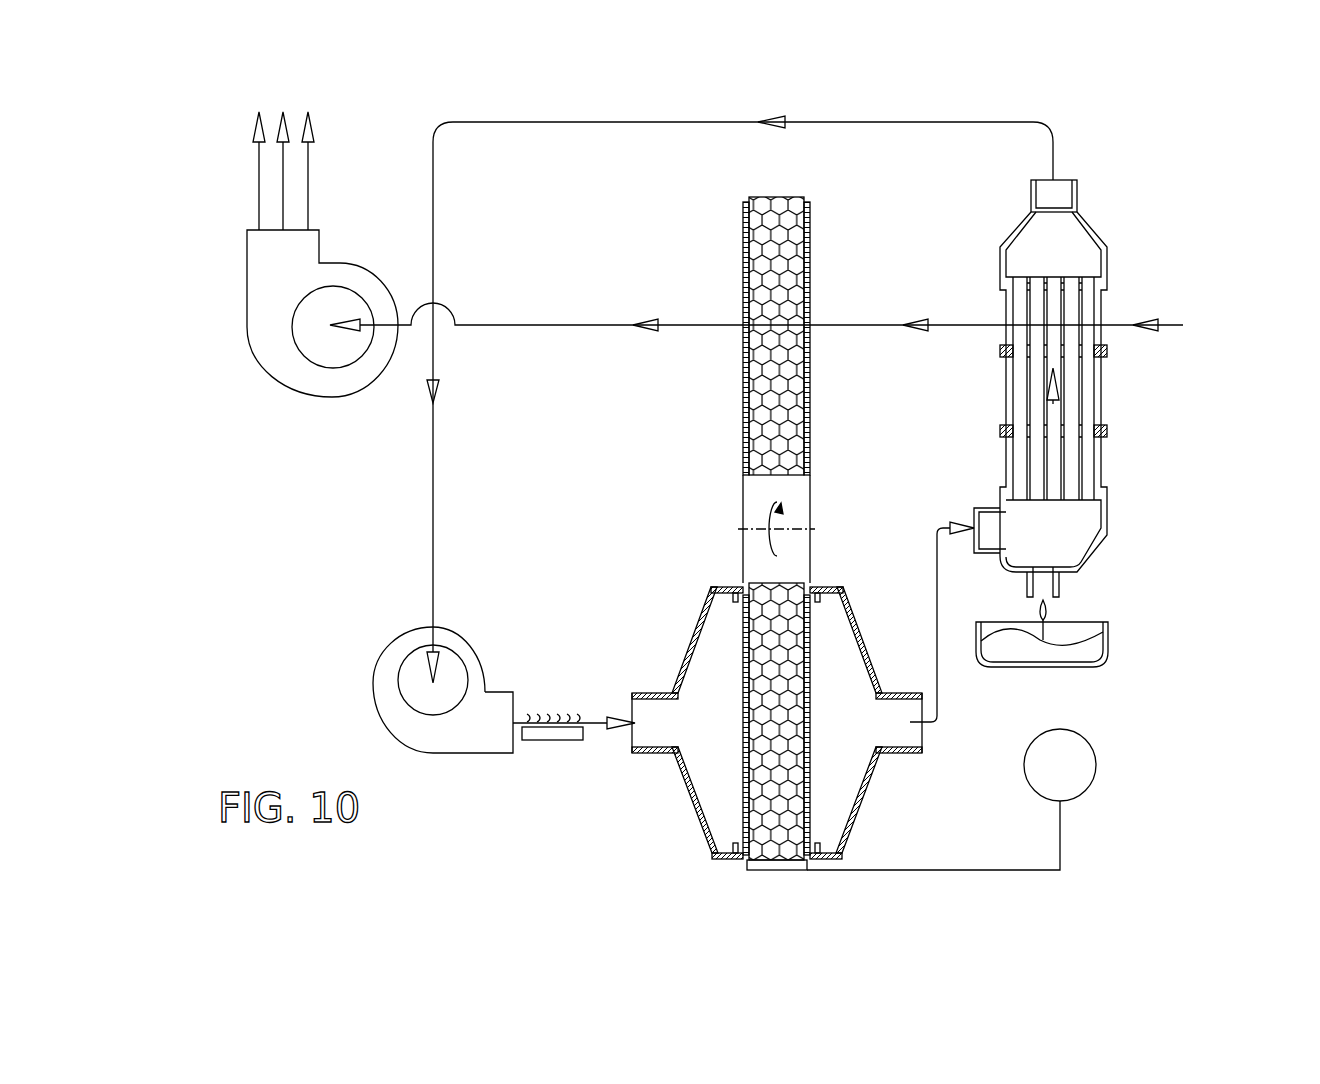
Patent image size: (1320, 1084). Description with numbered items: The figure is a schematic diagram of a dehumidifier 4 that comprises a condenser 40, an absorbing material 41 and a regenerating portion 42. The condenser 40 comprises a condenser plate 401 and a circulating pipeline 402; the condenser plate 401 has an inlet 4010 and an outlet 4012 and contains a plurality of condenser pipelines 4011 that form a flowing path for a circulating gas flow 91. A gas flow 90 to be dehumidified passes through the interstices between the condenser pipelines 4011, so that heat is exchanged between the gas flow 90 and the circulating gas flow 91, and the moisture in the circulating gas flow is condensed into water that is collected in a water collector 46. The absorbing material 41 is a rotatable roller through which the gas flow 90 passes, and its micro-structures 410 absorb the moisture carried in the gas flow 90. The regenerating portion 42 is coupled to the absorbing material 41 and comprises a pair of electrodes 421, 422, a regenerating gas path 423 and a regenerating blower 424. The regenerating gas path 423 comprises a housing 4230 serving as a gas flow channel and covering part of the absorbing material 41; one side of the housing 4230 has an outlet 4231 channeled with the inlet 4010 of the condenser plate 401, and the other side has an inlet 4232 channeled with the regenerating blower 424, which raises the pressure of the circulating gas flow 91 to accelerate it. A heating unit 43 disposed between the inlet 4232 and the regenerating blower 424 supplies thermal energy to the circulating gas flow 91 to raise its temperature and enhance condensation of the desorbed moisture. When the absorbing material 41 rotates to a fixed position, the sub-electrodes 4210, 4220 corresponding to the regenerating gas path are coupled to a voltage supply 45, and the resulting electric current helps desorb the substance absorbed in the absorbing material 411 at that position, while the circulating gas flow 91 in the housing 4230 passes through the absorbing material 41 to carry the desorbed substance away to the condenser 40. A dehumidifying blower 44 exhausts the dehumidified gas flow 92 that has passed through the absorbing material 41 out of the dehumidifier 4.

The dehumidifier 4 is at (232, 207).
The condenser 40 is at (1036, 429).
The condenser plate 401 is at (1098, 312).
The inlet 4010 is at (985, 520).
The condenser pipelines 4011 is at (1098, 462).
The outlet 4012 is at (1062, 190).
The circulating pipeline 402 is at (560, 123).
The absorbing material 41 is at (773, 524).
The micro-structures 410 is at (775, 775).
The absorbing material 411 is at (745, 858).
The regenerating portion 42 is at (790, 663).
The electrode 421 is at (743, 250).
The electrode 422 is at (811, 300).
The regenerating gas path 423 is at (695, 635).
The sub-electrode 4210 is at (745, 715).
The sub-electrode 4220 is at (805, 733).
The housing 4230 is at (685, 790).
The outlet 4231 is at (898, 738).
The inlet 4232 is at (652, 735).
The regenerating blower 424 is at (460, 643).
The heating unit 43 is at (540, 745).
The dehumidifying blower 44 is at (317, 380).
The voltage supply 45 is at (1085, 755).
The water collector 46 is at (1105, 660).
The gas flow 90 is at (1153, 332).
The circulating gas flow 91 is at (442, 382).
The dehumidified gas flow 92 is at (650, 320).